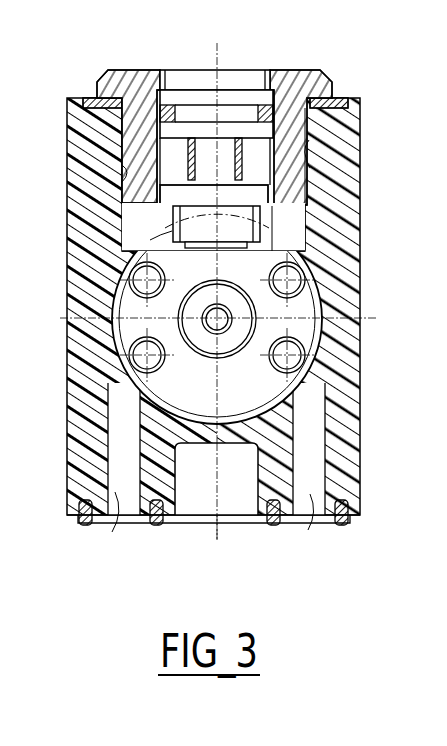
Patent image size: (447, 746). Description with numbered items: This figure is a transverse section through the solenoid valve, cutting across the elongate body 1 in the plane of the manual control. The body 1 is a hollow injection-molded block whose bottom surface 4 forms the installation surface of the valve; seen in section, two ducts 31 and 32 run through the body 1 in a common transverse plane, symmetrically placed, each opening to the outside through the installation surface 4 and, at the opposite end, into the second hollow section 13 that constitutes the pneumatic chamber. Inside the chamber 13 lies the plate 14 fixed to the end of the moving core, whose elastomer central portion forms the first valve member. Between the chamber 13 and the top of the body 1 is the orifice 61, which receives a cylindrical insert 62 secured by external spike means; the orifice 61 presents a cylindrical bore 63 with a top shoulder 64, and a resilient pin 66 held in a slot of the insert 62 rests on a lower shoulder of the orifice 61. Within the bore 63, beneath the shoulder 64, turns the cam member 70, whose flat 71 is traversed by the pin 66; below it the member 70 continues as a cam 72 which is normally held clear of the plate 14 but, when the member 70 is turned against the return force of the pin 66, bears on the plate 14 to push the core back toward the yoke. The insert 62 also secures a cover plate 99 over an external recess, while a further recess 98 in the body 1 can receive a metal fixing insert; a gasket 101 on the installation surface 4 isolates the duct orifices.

The elongate body 1 is at (354, 210).
The bottom surface 4 is at (205, 526).
The second hollow section 13 is at (246, 413).
The plate 14 is at (163, 396).
The duct 31 is at (117, 525).
The duct 32 is at (313, 525).
The orifice 61 is at (120, 186).
The cylindrical insert 62 is at (292, 171).
The cylindrical bore 63 is at (183, 138).
The top shoulder 64 is at (160, 78).
The resilient pin 66 is at (297, 84).
The cam member 70 is at (236, 118).
The flat 71 is at (215, 159).
The cam 72 is at (232, 233).
The recess 98 is at (200, 490).
The cover plate 99 is at (94, 97).
The gasket 101 is at (158, 527).